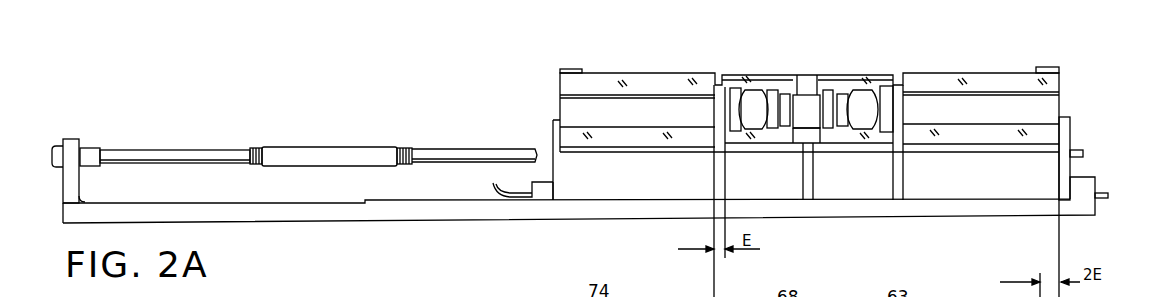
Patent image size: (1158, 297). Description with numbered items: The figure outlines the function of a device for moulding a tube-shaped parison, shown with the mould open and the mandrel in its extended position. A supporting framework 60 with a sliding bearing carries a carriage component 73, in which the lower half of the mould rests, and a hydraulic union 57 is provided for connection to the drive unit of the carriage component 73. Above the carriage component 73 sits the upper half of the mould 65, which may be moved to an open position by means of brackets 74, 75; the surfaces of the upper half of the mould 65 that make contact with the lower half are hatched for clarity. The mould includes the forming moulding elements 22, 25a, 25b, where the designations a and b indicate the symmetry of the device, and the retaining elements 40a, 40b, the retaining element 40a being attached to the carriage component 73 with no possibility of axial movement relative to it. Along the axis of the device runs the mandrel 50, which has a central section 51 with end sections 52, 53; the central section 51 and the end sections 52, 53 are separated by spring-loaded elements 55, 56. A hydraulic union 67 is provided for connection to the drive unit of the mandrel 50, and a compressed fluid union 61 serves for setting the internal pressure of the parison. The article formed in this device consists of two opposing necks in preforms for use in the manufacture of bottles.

The moulding element 22 is at (808, 85).
The moulding element 25a is at (765, 92).
The moulding element 25b is at (852, 92).
The retaining element 40a is at (607, 85).
The retaining element 40b is at (982, 83).
The mandrel 50 is at (330, 136).
The central section 51 is at (353, 150).
The end section 52 is at (131, 157).
The end section 53 is at (452, 153).
The spring-loaded element 55 is at (262, 150).
The spring-loaded element 56 is at (408, 150).
The hydraulic union 57 is at (493, 183).
The supporting framework 60 is at (175, 212).
The compressed fluid union 61 is at (1083, 152).
The upper half of the mould 65 is at (917, 105).
The hydraulic union 67 is at (1102, 200).
The carriage component 73 is at (618, 175).
The bracket 74 is at (571, 70).
The bracket 75 is at (1043, 68).